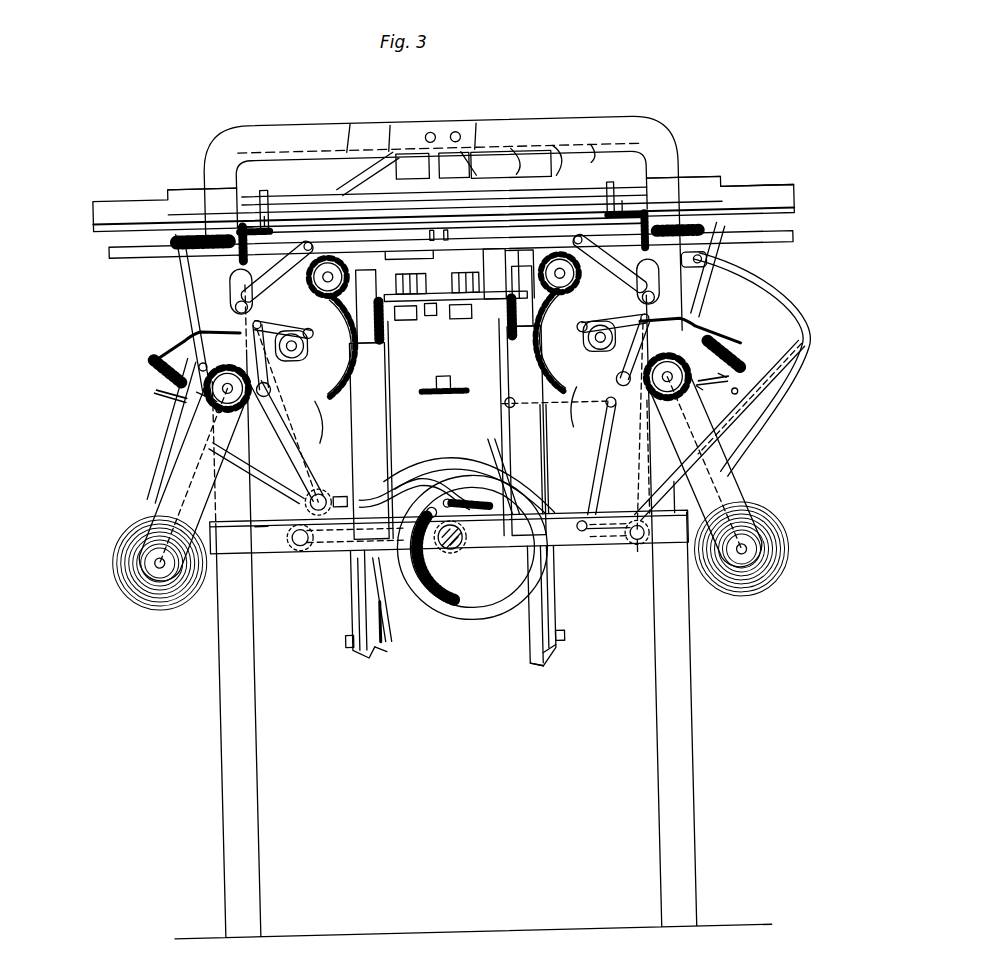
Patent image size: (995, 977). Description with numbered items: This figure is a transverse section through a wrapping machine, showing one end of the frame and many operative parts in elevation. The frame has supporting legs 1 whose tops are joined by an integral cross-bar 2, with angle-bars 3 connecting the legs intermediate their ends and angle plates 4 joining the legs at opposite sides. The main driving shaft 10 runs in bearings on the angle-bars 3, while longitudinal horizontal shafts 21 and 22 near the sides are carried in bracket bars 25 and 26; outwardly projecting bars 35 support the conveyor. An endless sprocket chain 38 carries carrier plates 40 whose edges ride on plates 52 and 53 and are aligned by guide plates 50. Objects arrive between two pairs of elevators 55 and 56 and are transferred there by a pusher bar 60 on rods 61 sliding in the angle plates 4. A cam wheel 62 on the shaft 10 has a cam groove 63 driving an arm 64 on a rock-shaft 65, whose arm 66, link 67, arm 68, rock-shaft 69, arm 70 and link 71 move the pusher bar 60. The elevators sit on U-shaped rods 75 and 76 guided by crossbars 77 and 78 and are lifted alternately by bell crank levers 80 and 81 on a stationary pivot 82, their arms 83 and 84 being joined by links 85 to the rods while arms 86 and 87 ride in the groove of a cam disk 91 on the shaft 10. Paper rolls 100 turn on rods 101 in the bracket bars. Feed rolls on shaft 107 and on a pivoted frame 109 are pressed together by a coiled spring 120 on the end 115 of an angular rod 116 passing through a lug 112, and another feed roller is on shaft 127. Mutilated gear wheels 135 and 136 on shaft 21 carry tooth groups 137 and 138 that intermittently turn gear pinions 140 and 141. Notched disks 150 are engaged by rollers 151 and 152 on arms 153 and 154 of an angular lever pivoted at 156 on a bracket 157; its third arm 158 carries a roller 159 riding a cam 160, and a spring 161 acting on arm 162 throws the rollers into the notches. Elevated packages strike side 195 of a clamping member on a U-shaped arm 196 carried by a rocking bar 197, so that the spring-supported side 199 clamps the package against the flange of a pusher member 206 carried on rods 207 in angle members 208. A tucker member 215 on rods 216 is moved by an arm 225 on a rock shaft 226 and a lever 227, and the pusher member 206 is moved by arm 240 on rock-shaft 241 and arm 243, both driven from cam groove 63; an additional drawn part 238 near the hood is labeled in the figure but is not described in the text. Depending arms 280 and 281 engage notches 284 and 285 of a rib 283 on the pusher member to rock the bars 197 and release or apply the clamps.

The supporting legs 1 is at (212, 770).
The cross-bar 2 is at (626, 123).
The angle-bars 3 is at (264, 556).
The angle plates 4 is at (176, 188).
The main driving shaft 10 is at (425, 625).
The horizontal shaft 21 is at (300, 398).
The horizontal shaft 22 is at (598, 346).
The bracket bar 25 is at (172, 496).
The bracket bar 26 is at (722, 498).
The outwardly projecting bars 35 is at (447, 429).
The endless conveyor or sprocket chain 38 is at (448, 376).
The carrier plates 40 is at (430, 312).
The guide plates 50 is at (465, 273).
The plate 52 is at (462, 307).
The plate 53 is at (404, 330).
The elevators 55 is at (512, 328).
The elevators 56 is at (398, 254).
The pusher bar 60 is at (482, 250).
The bars or rods 61 is at (542, 250).
The cam wheel 62 is at (446, 605).
The cam groove 63 is at (492, 603).
The arm 64 is at (476, 480).
The rock-shaft 65 is at (520, 404).
The arm 66 is at (585, 407).
The link 67 is at (612, 484).
The arm 68 is at (602, 546).
The rock-shaft 69 is at (636, 548).
The arm 70 is at (770, 409).
The link 71 is at (726, 274).
The U-shaped rod 75 is at (518, 350).
The U-shaped rod 76 is at (392, 345).
The crossbar 77 is at (548, 461).
The crossbar 78 is at (386, 455).
The bell crank lever 80 is at (548, 662).
The bell crank lever 81 is at (380, 658).
The stationary pivot 82 is at (348, 648).
The arm 83 is at (536, 668).
The arm 84 is at (380, 636).
The links 85 is at (366, 612).
The arm 86 is at (553, 613).
The arm 87 is at (370, 598).
The cam wheel or disk 91 is at (462, 476).
The rolls 100 is at (136, 582).
The rods 101 is at (152, 566).
The rotatable shaft or rod 107 is at (215, 392).
The frame 109 is at (200, 386).
The lug or ear 112 is at (168, 384).
The lower inwardly extending end 115 is at (160, 370).
The angular rod 116 is at (200, 330).
The coiled spring 120 is at (160, 352).
The rod or shaft 127 is at (322, 244).
The mutilated gear wheel 135 is at (322, 430).
The mutilated gear wheel 136 is at (240, 272).
The group of teeth 137 is at (330, 462).
The group of teeth 138 is at (250, 292).
The gear pinion 140 is at (192, 256).
The gear pinion 141 is at (222, 406).
The notched disks 150 is at (326, 288).
The roller 151 is at (225, 405).
The roller 152 is at (280, 192).
The arm 153 is at (252, 341).
The arm 154 is at (300, 250).
The pivot 156 is at (232, 322).
The bracket 157 is at (205, 232).
The third arm 158 is at (290, 324).
The roller 159 is at (318, 331).
The cam 160 is at (300, 356).
The spring 161 is at (150, 215).
The arm 162 is at (150, 240).
The side of clamping member 195 is at (529, 124).
The U-shaped arm 196 is at (360, 122).
The rocking bar 197 is at (466, 130).
The opposite side of clamping member 199 is at (612, 146).
The pusher member 206 is at (455, 166).
The rods 207 is at (730, 193).
The angle members 208 is at (278, 215).
The tucker member 215 is at (438, 242).
The rods 216 is at (250, 222).
The arm 225 is at (340, 500).
The rock shaft 226 is at (310, 498).
The arm or lever 227 is at (306, 472).
The post 238 is at (570, 122).
The arm 240 is at (360, 541).
The rock-shaft 241 is at (299, 548).
The arm 243 is at (268, 522).
The depending arm 280 is at (400, 124).
The depending arm 281 is at (486, 124).
The rib 283 is at (392, 158).
The notch 284 is at (411, 166).
The notch 285 is at (530, 180).